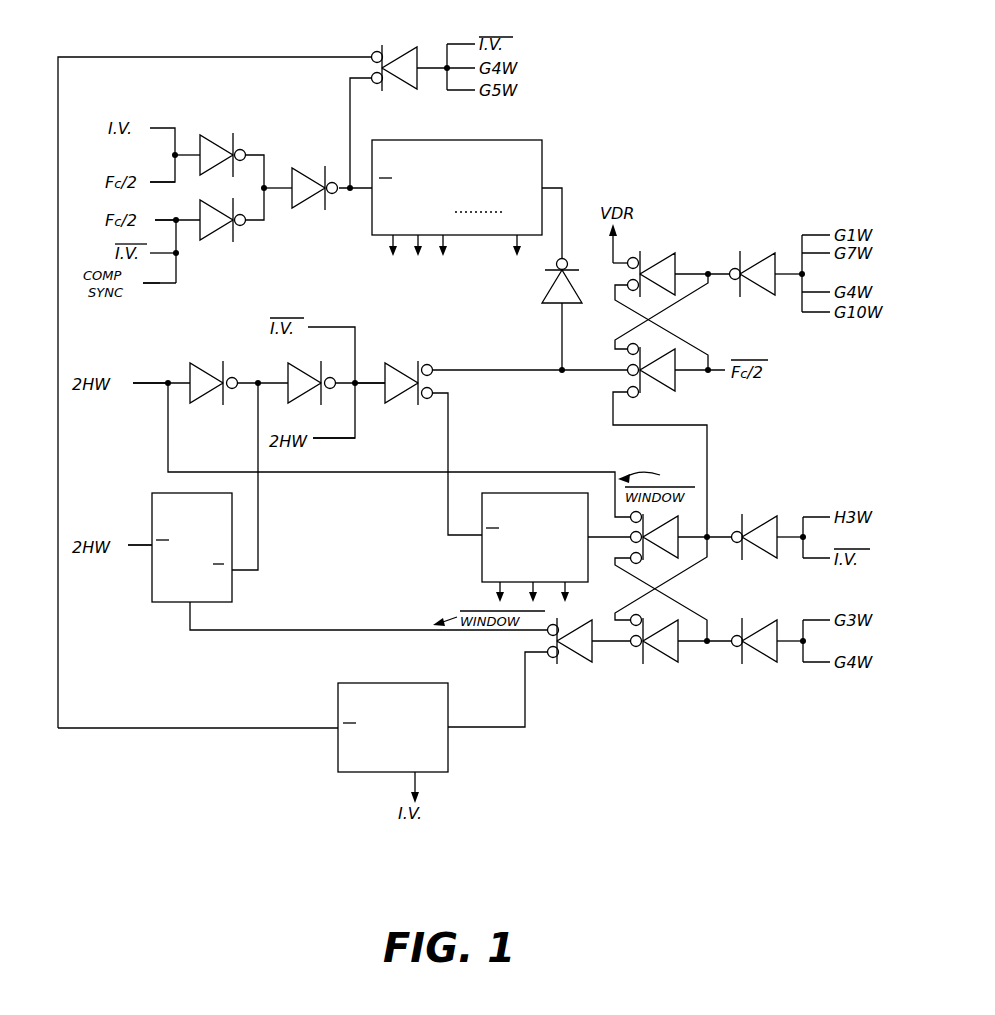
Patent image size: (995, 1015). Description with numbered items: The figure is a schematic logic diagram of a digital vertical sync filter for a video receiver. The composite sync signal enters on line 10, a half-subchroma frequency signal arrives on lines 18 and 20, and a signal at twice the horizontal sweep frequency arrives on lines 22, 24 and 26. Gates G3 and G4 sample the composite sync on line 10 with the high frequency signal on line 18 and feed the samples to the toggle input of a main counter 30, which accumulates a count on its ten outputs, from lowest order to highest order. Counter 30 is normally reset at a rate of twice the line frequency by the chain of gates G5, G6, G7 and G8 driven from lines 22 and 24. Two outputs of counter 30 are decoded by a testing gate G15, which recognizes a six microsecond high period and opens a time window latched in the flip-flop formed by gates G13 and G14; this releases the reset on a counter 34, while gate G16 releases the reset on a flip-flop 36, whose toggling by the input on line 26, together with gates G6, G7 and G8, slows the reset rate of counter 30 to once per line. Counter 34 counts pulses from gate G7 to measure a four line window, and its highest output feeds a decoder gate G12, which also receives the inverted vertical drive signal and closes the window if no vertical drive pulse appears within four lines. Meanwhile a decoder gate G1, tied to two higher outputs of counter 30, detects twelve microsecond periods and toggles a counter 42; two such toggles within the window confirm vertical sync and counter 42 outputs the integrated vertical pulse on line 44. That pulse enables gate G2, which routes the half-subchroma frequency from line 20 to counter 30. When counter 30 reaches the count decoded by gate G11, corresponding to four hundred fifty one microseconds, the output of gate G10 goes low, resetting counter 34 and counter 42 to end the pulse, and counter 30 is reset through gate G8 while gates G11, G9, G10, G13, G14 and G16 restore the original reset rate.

The line 10 is at (152, 285).
The line 18 is at (158, 222).
The line 20 is at (155, 180).
The line 22 is at (153, 380).
The line 24 is at (338, 435).
The line 26 is at (136, 548).
The main counter 30 is at (469, 163).
The counter 34 is at (548, 522).
The flip-flop 36 is at (197, 564).
The counter 42 is at (407, 715).
The line 44 is at (425, 780).
The decoder gate G1 is at (404, 58).
The gate G2 is at (222, 143).
The gate G3 is at (218, 232).
The gate G4 is at (312, 200).
The gate G5 is at (218, 372).
The gate G6 is at (312, 372).
The gate G7 is at (406, 370).
The gate G8 is at (548, 287).
The gate G9 is at (660, 264).
The gate G10 is at (652, 384).
The gate G11 is at (757, 264).
The decoder gate G12 is at (755, 527).
The gate G13 is at (658, 542).
The gate G14 is at (656, 655).
The testing gate G15 is at (758, 655).
The gate G16 is at (570, 655).